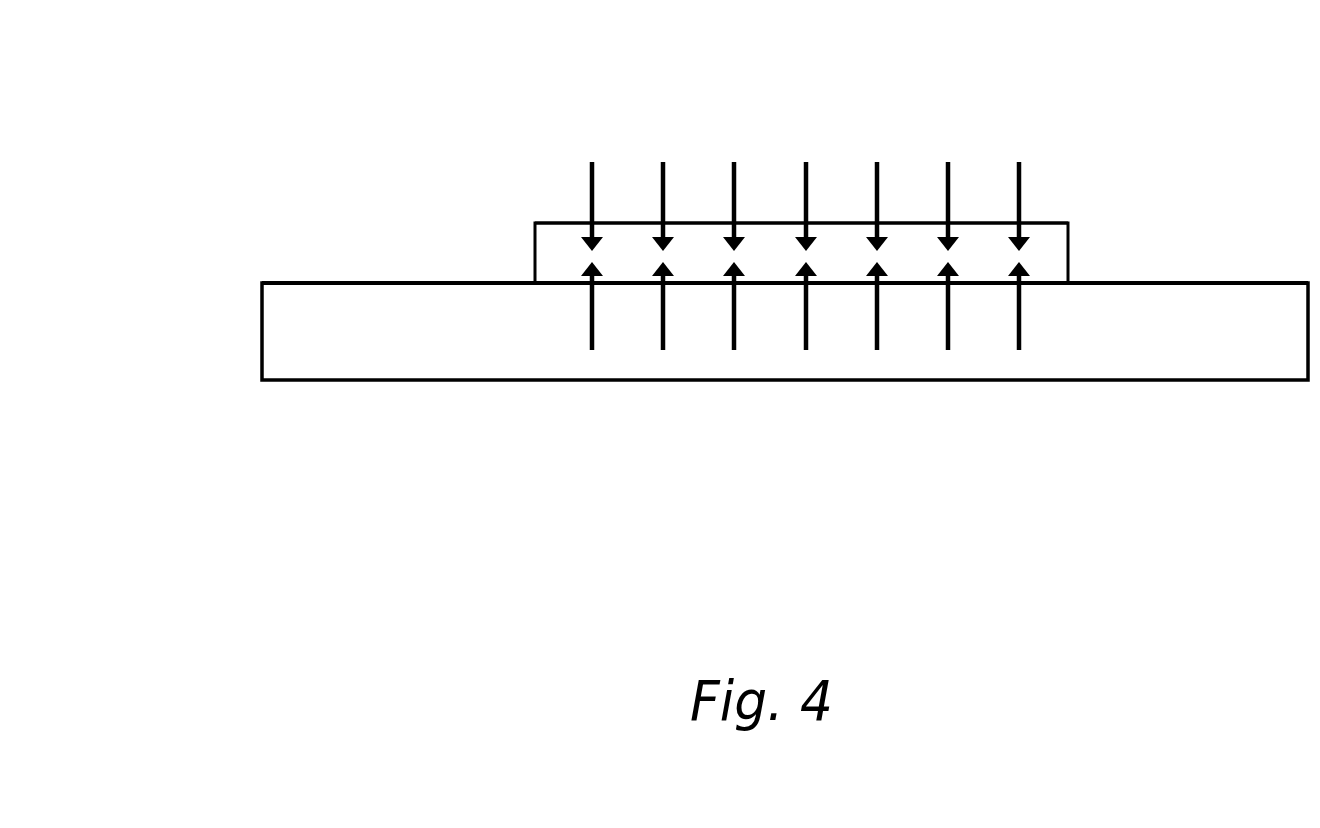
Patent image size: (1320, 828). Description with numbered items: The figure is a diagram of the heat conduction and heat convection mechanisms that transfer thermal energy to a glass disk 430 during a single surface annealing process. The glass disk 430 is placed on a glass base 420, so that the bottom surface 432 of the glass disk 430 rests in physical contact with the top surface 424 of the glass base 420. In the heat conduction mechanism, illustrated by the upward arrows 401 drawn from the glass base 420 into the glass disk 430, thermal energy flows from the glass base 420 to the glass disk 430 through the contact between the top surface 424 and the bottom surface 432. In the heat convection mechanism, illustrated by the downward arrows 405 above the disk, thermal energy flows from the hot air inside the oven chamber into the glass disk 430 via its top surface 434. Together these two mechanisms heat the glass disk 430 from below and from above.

The arrows illustrating heat conduction 401 is at (1017, 357).
The arrows illustrating heat convection 405 is at (1008, 157).
The glass base 420 is at (293, 342).
The top surface of the glass base 424 is at (497, 281).
The glass disk 430 is at (555, 240).
The bottom surface of the glass disk 432 is at (1047, 282).
The top surface of the glass disk 434 is at (1040, 222).